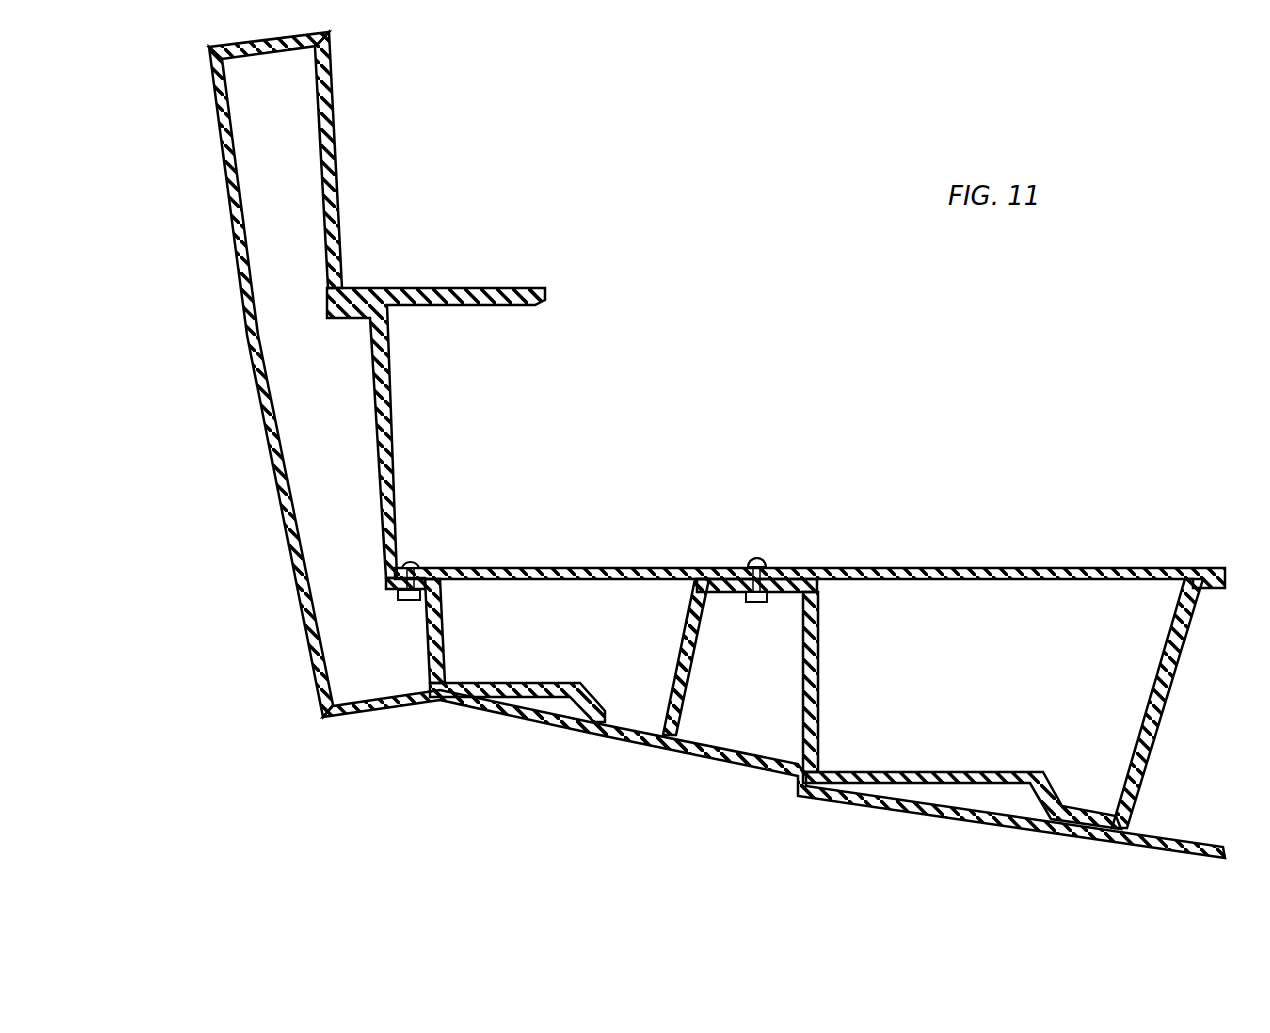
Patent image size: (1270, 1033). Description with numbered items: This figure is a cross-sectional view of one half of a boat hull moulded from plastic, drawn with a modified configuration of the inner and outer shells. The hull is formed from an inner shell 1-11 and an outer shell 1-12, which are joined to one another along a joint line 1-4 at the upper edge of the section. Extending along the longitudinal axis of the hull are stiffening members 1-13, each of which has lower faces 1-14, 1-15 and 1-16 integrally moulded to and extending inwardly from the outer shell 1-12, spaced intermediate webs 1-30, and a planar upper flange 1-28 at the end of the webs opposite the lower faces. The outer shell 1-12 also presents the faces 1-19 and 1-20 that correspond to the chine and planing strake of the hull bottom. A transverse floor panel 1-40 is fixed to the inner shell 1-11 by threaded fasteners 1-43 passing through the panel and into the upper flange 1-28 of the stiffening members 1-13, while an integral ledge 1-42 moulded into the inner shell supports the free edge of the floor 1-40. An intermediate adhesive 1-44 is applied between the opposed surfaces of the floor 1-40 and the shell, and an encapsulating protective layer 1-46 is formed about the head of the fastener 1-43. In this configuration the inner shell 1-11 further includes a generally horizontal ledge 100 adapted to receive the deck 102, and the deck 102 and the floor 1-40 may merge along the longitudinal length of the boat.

The joint line 1-4 is at (212, 97).
The inner shell 1-11 is at (336, 135).
The outer shell 1-12 is at (278, 510).
The horizontal ledge 100 is at (390, 300).
The deck 102 is at (523, 288).
The stiffening member 1-13 is at (455, 608).
The floor panel 1-40 is at (476, 565).
The integral ledge 1-42 is at (398, 600).
The intermediate web 1-30 is at (443, 660).
The intermediate adhesive 1-44 is at (693, 584).
The upper flange 1-28 is at (722, 598).
The threaded fastener 1-43 is at (768, 563).
The encapsulating protective layer 1-46 is at (750, 565).
The lower face 1-15 is at (843, 773).
The lower face 1-16 is at (1083, 806).
The planing strake face 1-20 is at (440, 705).
The lower face 1-14 is at (612, 715).
The chine face 1-19 is at (826, 795).